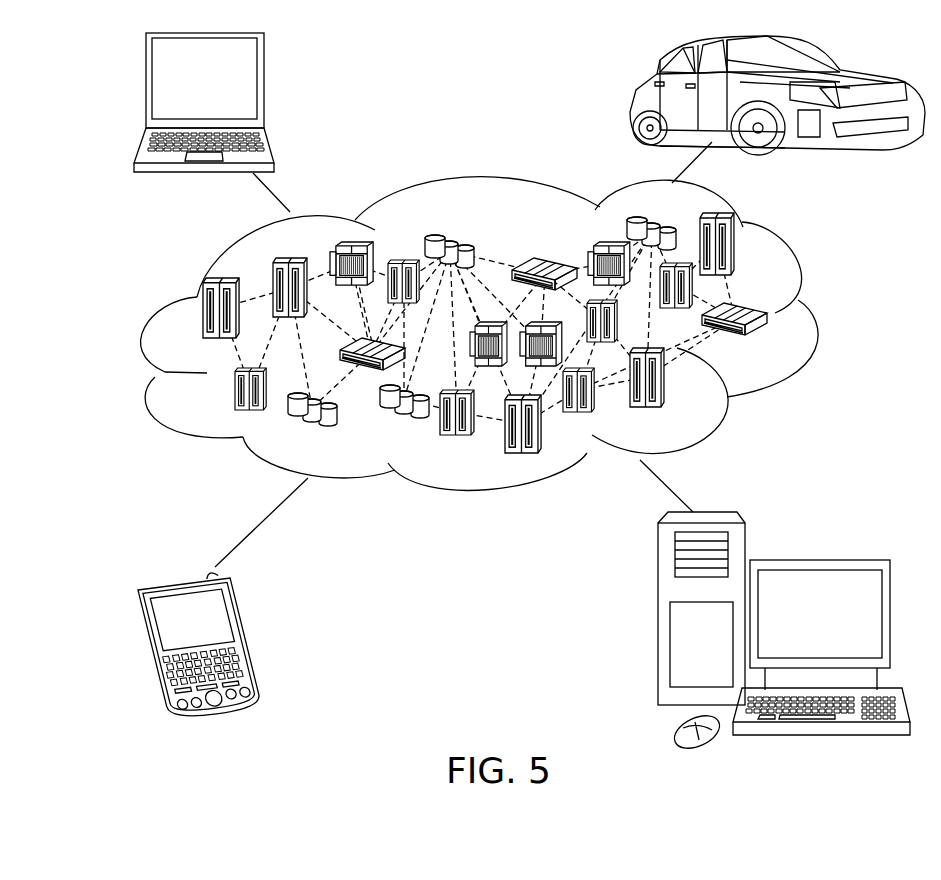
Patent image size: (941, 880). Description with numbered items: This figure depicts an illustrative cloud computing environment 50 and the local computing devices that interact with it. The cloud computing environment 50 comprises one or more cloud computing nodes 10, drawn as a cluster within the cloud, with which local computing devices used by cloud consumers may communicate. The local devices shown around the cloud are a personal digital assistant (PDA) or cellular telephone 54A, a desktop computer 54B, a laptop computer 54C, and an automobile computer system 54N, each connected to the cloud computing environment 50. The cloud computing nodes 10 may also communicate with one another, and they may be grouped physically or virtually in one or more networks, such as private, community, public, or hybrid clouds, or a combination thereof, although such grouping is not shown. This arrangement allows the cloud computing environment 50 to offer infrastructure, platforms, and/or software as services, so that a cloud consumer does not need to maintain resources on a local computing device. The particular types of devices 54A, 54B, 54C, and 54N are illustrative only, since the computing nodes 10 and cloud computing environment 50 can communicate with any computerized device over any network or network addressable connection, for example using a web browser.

The cloud computing nodes 10 is at (774, 344).
The cloud computing environment 50 is at (818, 315).
The personal digital assistant (PDA) or cellular telephone 54A is at (252, 643).
The desktop computer 54B is at (817, 558).
The laptop computer 54C is at (263, 85).
The automobile computer system 54N is at (632, 100).